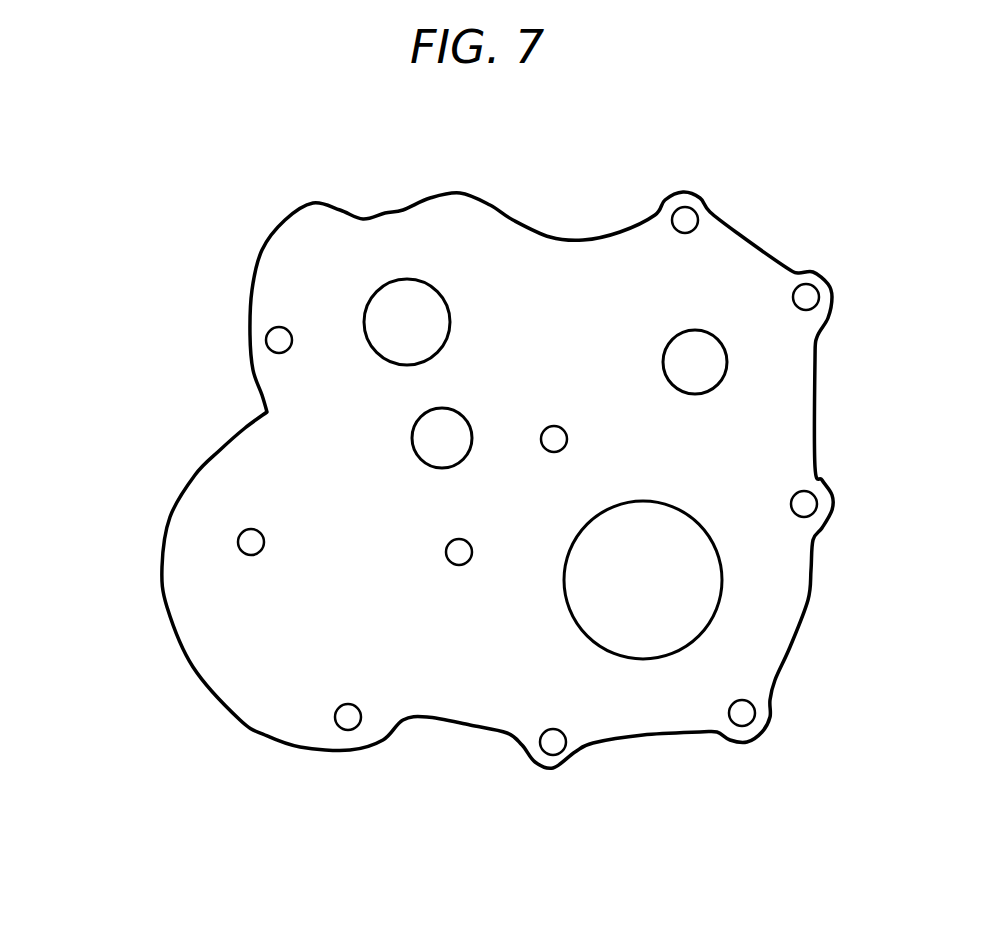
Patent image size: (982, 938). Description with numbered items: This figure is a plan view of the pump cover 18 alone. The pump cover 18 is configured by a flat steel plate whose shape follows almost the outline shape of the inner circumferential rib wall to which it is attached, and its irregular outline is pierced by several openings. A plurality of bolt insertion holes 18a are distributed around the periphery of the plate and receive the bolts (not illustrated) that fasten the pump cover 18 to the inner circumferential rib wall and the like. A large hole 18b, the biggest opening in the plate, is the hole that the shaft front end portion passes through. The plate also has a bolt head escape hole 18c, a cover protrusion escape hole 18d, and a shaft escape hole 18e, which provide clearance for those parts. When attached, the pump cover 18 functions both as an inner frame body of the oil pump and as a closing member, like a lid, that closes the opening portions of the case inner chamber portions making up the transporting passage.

The pump cover 18 is at (239, 719).
The bolt insertion holes 18a is at (287, 333).
The large hole 18b is at (673, 650).
The bolt head escape hole 18c is at (718, 352).
The cover protrusion escape hole 18d is at (460, 460).
The shaft escape hole 18e is at (427, 287).